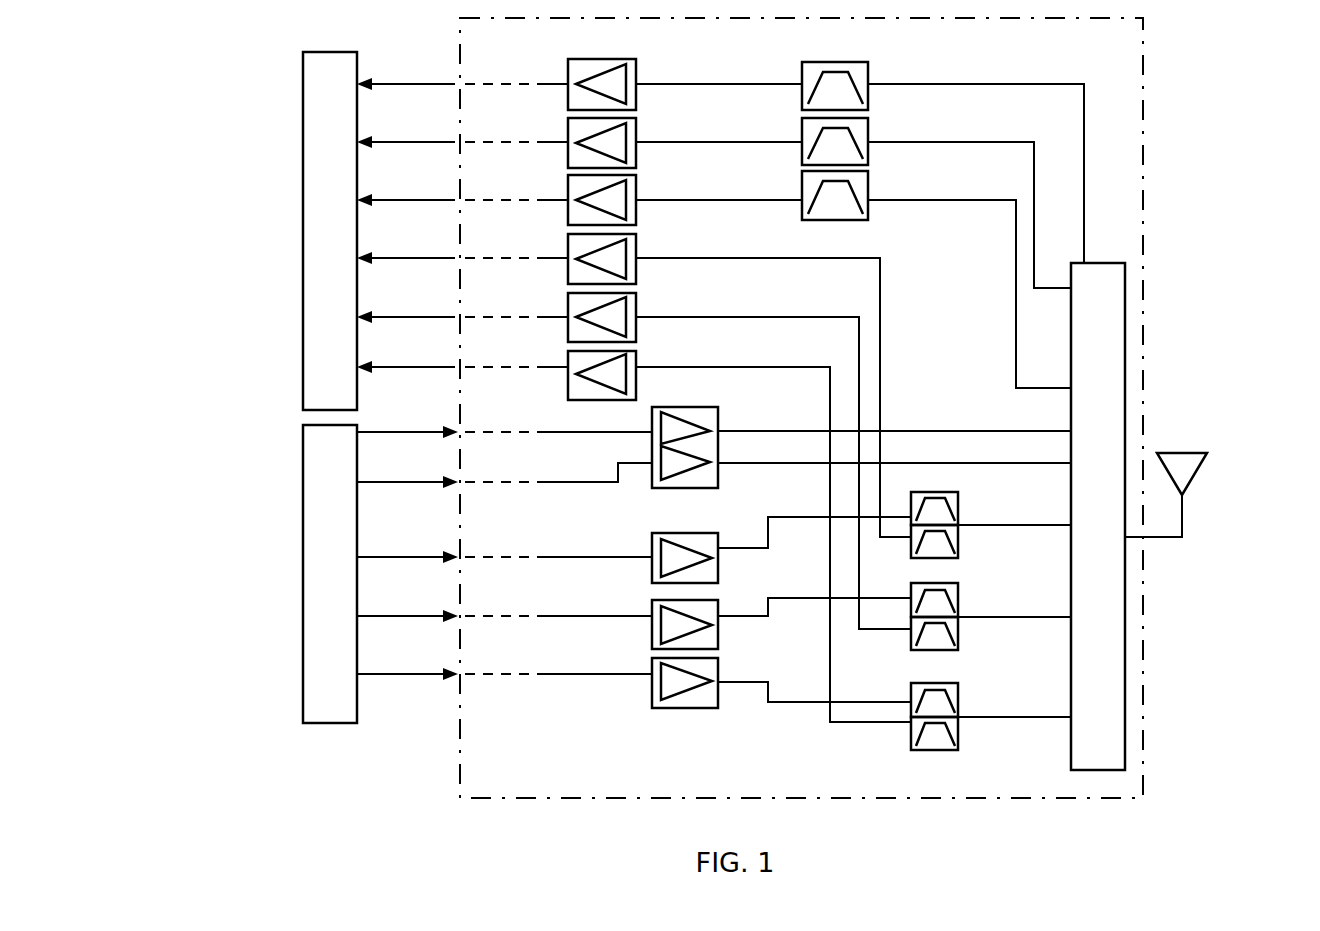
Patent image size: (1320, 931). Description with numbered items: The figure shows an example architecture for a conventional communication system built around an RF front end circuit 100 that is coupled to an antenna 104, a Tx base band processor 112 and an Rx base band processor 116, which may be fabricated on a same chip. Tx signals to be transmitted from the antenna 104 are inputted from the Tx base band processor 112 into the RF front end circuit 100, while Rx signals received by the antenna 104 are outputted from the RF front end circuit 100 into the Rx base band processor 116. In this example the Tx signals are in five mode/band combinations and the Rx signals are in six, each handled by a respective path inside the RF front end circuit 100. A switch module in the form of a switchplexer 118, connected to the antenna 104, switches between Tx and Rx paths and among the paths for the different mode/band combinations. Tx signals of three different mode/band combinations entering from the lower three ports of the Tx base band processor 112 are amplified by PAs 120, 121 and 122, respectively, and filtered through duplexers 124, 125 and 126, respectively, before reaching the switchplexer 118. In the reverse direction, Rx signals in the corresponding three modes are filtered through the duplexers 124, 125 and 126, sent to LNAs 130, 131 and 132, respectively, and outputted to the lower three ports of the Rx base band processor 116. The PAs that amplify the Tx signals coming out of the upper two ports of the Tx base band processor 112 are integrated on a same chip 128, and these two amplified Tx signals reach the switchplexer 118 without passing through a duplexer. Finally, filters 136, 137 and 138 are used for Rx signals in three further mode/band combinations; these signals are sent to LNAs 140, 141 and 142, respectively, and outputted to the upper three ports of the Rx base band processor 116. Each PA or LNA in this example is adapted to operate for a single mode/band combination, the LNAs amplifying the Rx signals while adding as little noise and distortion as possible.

The RF front end circuit 100 is at (1146, 143).
The antenna 104 is at (1178, 452).
The Tx base band processor 112 is at (302, 613).
The Rx base band processor 116 is at (302, 280).
The switchplexer 118 is at (1125, 307).
The power amplifier 120 is at (700, 533).
The power amplifier 121 is at (720, 598).
The power amplifier 122 is at (720, 675).
The duplexer 124 is at (950, 491).
The duplexer 125 is at (960, 583).
The duplexer 126 is at (960, 680).
The chip 128 is at (720, 417).
The low noise amplifier 130 is at (640, 242).
The low noise amplifier 131 is at (640, 300).
The low noise amplifier 132 is at (638, 360).
The filter 136 is at (870, 62).
The filter 137 is at (870, 120).
The filter 138 is at (870, 183).
The low noise amplifier 140 is at (620, 58).
The low noise amplifier 141 is at (637, 125).
The low noise amplifier 142 is at (638, 183).